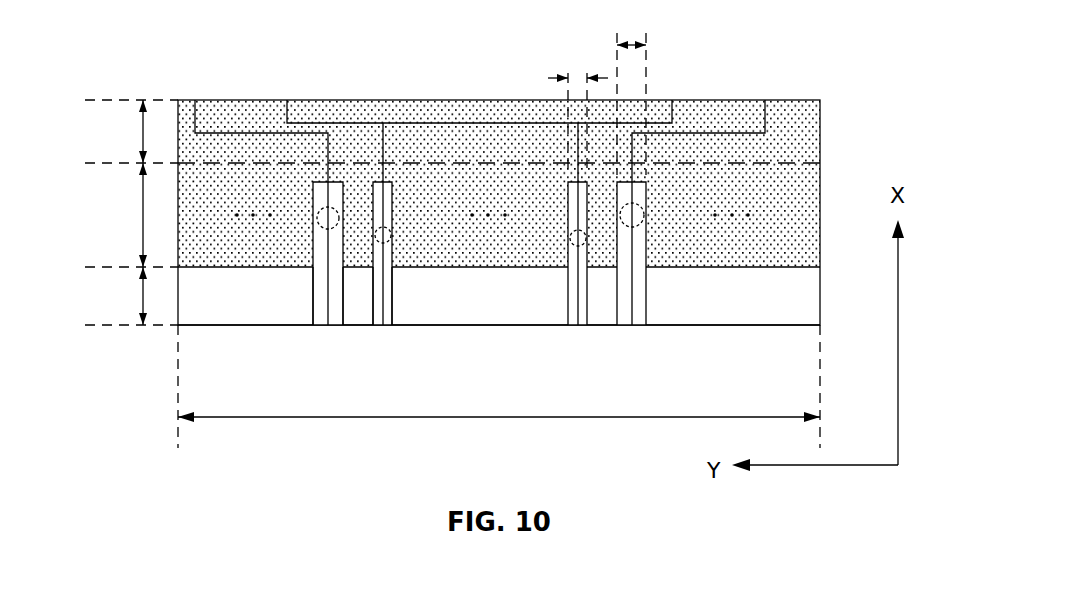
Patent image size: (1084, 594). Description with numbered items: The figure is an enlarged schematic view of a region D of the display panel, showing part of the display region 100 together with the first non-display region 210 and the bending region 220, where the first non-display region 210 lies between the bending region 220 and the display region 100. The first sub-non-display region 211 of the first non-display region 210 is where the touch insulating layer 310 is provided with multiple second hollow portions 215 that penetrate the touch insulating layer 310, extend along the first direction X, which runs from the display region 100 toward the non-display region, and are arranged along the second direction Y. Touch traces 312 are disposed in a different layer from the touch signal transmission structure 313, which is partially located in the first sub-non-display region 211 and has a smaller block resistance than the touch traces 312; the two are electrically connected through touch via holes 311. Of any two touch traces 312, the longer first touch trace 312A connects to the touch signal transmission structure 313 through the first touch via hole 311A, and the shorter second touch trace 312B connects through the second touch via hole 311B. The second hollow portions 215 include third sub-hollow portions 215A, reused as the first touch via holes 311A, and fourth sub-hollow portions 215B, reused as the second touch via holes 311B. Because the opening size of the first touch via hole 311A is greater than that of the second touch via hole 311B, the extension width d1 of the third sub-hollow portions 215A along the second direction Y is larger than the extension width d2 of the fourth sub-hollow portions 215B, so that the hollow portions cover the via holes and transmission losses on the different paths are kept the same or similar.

The region D is at (124, 29).
The display region 100 is at (452, 131).
The first non-display region 210 is at (452, 215).
The first sub-non-display region 211 is at (520, 42).
The bending region 220 is at (452, 296).
The touch insulating layer 310 is at (775, 208).
The touch via holes 311 is at (422, 281).
The first touch via hole 311A is at (325, 228).
The second touch via hole 311B is at (393, 238).
The touch traces 312 is at (476, 184).
The first touch trace 312A is at (222, 133).
The second touch trace 312B is at (343, 123).
The touch signal transmission structure 313 is at (330, 295).
The second hollow portions 215 is at (479, 214).
The third sub-hollow portions 215A is at (338, 197).
The fourth sub-hollow portions 215B is at (458, 193).
The extension width of the third sub-hollow portions d1 is at (633, 92).
The extension width of the fourth sub-hollow portions d2 is at (578, 111).